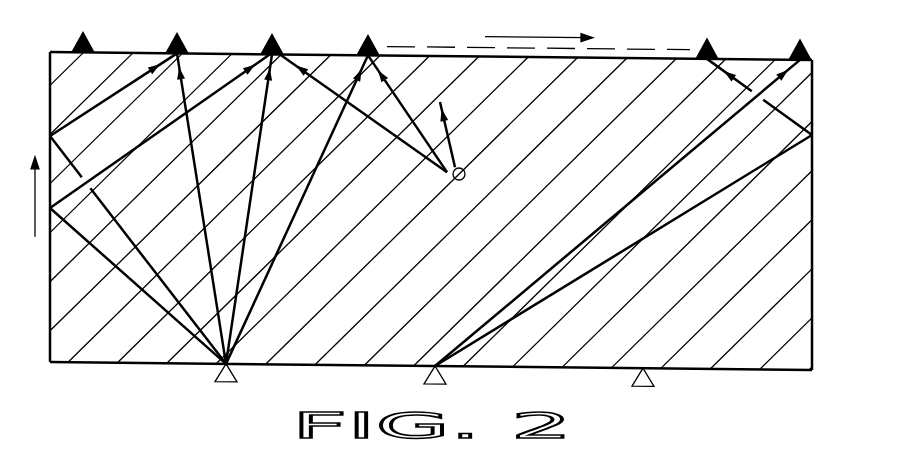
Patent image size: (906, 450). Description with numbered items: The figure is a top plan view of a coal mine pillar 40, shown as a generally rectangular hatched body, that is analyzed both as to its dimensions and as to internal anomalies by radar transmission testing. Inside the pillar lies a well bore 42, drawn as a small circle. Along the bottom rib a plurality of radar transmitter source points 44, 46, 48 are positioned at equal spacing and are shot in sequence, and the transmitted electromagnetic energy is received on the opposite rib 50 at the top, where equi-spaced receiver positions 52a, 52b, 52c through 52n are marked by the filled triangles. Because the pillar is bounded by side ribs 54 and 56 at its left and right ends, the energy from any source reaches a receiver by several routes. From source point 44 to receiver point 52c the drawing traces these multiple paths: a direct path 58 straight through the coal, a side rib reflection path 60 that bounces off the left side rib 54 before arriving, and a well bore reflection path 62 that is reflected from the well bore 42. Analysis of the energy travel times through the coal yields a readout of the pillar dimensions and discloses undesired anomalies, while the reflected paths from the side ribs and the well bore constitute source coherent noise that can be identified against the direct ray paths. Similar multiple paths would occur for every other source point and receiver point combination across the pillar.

The coal pillar 40 is at (494, 236).
The well bore 42 is at (465, 168).
The radar transmitter source point 44 is at (222, 380).
The radar transmitter source point 46 is at (433, 380).
The radar transmitter source point 48 is at (641, 380).
The opposite rib 50 is at (238, 51).
The receiver position 52a is at (86, 31).
The receiver position 52b is at (180, 31).
The receiver position 52c is at (277, 31).
The receiver position 52n is at (804, 34).
The side rib 54 is at (50, 282).
The side rib 56 is at (812, 185).
The direct path 58 is at (254, 175).
The side rib reflection path 60 is at (140, 146).
The well bore reflection path 62 is at (386, 128).